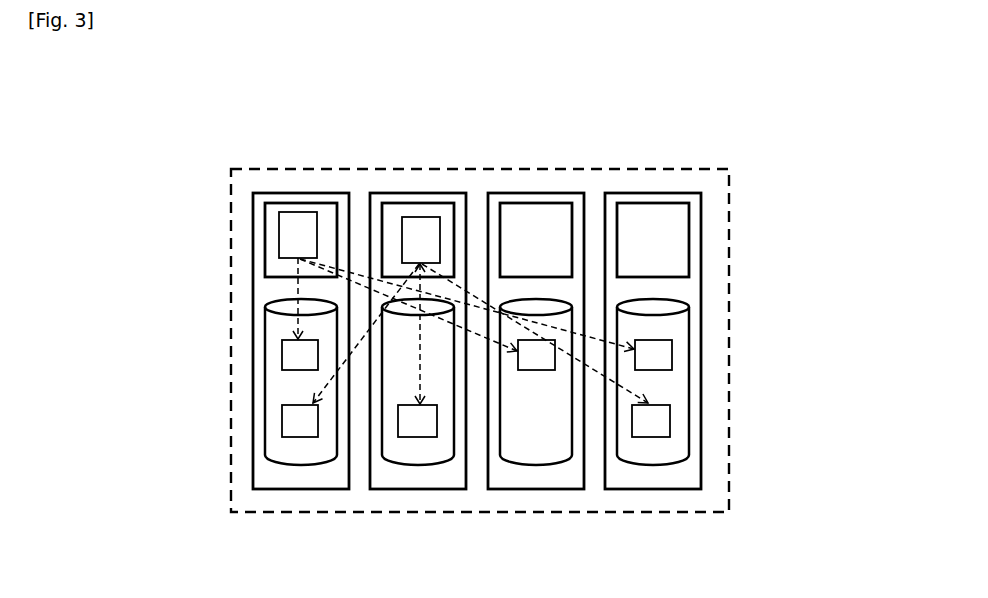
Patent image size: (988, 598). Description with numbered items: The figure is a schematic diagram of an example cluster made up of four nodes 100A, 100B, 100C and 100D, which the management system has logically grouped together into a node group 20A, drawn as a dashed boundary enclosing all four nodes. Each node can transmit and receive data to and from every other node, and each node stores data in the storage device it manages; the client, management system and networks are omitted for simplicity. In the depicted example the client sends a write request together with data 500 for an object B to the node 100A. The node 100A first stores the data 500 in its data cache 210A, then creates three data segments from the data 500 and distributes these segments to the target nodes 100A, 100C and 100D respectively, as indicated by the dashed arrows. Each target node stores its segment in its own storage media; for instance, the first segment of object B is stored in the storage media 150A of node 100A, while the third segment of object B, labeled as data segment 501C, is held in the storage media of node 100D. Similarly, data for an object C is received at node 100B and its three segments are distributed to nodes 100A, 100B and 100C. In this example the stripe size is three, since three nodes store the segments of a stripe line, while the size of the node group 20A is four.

The node group 20A is at (732, 442).
The node 100A is at (285, 312).
The node 100B is at (413, 192).
The node 100C is at (538, 192).
The node 100D is at (711, 288).
The data cache 210A is at (285, 194).
The storage media 150A is at (305, 452).
The data 500 is at (318, 226).
The data segment 501C is at (672, 347).